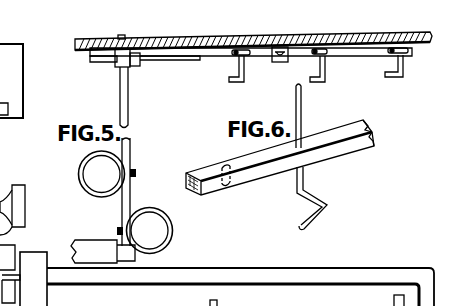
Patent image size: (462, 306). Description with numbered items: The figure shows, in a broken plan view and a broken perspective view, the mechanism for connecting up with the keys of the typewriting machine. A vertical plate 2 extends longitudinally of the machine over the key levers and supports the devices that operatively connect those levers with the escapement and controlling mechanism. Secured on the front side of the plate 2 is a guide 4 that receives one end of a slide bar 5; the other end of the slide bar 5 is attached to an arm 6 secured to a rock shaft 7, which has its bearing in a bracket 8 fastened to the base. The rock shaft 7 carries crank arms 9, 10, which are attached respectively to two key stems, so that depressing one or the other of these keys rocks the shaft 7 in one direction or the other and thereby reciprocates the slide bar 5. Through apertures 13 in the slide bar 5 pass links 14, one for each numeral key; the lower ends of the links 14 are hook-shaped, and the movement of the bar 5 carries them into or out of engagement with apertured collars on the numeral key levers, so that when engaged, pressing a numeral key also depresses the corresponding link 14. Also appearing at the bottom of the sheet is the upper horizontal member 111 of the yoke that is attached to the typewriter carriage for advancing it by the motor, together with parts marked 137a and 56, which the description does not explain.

In FIG. 5, the vertical plate 2 is at (218, 37).
In FIG. 5, the guide 4 is at (287, 37).
In FIG. 5, the slide bar 5 is at (352, 56).
In FIG. 6, the slide bar 5 is at (266, 175).
In FIG. 5, the arm 6 is at (141, 67).
In FIG. 5, the rock shaft 7 is at (129, 89).
In FIG. 5, the bracket 8 is at (103, 251).
In FIG. 5, the crank arm 9 is at (136, 174).
In FIG. 5, the crank arm 10 is at (118, 230).
In FIG. 6, the aperture 13 is at (223, 167).
In FIG. 5, the link 14 is at (320, 67).
In FIG. 6, the link 14 is at (304, 179).
In FIG. 5, the upper horizontal member 111 is at (255, 268).
In FIG. 5, the frame member 137a is at (230, 299).
In FIG. 5, the frame member 56 is at (286, 303).